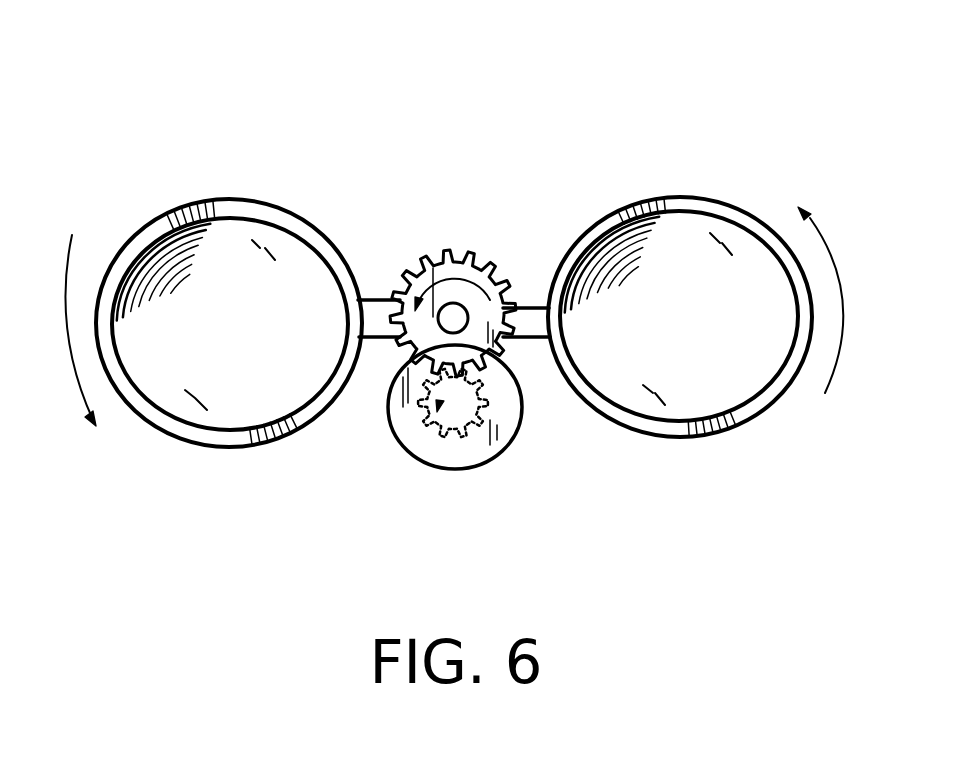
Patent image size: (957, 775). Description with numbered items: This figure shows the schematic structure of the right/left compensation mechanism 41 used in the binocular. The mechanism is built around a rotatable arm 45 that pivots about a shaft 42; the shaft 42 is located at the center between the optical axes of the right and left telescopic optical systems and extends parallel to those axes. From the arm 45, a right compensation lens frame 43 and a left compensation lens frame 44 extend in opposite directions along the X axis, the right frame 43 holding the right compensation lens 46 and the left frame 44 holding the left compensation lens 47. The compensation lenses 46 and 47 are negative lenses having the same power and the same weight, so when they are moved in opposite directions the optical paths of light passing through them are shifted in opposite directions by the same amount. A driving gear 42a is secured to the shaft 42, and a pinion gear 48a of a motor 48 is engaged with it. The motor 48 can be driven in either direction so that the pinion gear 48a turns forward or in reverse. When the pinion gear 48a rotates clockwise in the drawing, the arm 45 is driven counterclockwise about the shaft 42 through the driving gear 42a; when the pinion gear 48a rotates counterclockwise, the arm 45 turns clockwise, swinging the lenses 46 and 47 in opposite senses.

The right/left compensation mechanism 41 is at (413, 173).
The shaft 42 is at (453, 260).
The driving gear 42a is at (458, 310).
The right compensation lens frame 43 is at (200, 435).
The left compensation lens frame 44 is at (715, 433).
The rotatable arm 45 is at (377, 288).
The right compensation lens 46 is at (227, 250).
The left compensation lens 47 is at (683, 245).
The motor 48 is at (417, 435).
The pinion gear 48a is at (472, 420).